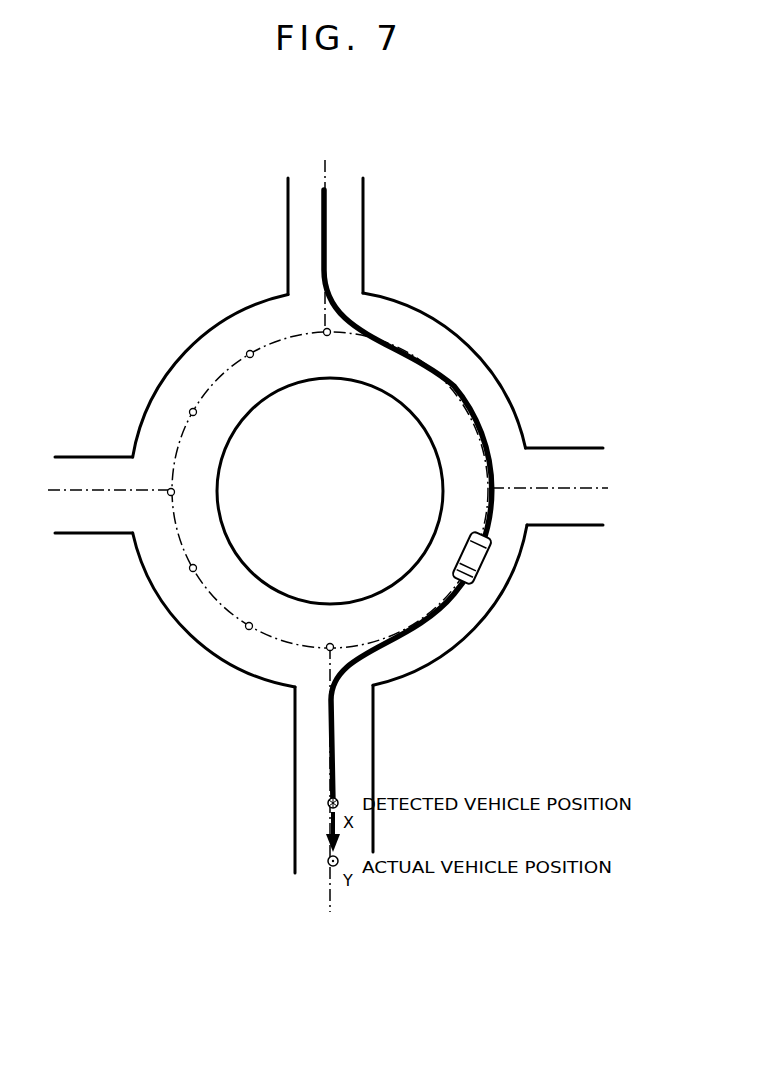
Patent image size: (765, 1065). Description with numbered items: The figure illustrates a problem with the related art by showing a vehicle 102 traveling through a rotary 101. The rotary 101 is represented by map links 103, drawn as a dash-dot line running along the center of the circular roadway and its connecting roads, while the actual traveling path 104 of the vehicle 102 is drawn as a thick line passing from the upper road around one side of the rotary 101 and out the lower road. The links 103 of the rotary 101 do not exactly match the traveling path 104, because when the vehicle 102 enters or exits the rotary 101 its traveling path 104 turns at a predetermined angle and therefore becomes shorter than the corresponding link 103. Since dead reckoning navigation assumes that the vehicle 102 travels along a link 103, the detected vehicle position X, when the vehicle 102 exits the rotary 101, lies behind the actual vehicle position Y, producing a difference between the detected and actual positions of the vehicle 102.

The rotary 101 is at (472, 322).
The vehicle 102 is at (490, 556).
The link 103 is at (348, 330).
The traveling path 104 is at (393, 642).